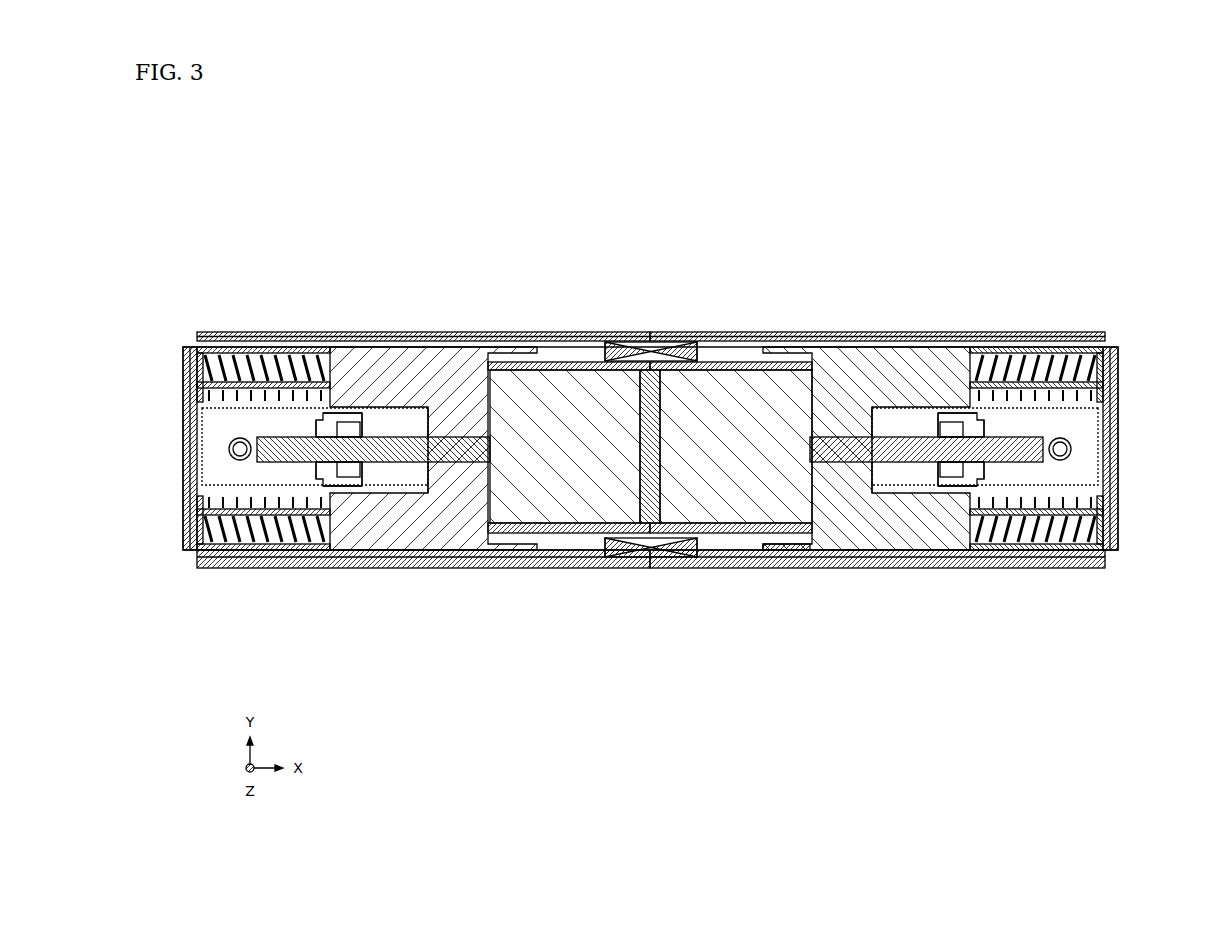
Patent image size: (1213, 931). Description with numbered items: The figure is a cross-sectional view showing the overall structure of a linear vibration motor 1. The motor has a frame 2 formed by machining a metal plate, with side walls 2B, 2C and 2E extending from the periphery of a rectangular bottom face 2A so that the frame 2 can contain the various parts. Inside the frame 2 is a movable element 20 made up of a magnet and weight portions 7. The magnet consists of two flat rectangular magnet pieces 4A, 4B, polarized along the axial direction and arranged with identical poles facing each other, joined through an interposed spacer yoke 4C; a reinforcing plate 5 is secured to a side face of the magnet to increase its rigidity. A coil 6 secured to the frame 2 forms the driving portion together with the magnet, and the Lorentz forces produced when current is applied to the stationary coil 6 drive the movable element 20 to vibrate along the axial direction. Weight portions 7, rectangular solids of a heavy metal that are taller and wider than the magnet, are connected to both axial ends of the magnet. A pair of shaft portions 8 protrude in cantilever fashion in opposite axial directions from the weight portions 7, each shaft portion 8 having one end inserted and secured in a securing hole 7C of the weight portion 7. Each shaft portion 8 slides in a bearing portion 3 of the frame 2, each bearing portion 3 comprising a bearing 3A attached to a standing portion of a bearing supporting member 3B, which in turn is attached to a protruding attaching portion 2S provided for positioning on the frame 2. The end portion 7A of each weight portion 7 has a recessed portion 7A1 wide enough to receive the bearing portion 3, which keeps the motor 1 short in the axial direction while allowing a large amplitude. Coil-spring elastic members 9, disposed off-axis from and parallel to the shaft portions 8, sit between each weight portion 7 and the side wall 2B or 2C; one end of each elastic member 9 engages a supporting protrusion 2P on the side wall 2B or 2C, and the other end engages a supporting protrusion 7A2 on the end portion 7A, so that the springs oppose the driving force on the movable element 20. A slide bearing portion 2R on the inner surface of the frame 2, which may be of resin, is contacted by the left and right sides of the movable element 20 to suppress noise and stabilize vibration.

The linear vibration motor 1 is at (1000, 245).
The frame 2 is at (1117, 337).
The bottom face 2A is at (573, 332).
The side wall 2B is at (183, 447).
The side wall 2C is at (1118, 410).
The side wall 2E is at (810, 332).
The supporting protrusion 2P is at (205, 332).
The slide bearing portion 2R is at (306, 332).
The attaching portion 2S is at (241, 438).
The bearing portion 3 is at (470, 265).
The bearing 3A is at (428, 407).
The bearing supporting member 3B is at (362, 415).
The magnet piece 4A is at (550, 512).
The magnet piece 4B is at (735, 515).
The spacer yoke 4C is at (630, 500).
The reinforcing plate 5 is at (720, 345).
The coil 6 is at (600, 348).
The weight portion 7 is at (440, 400).
The end portion 7A is at (334, 385).
The recessed portion 7A1 is at (408, 470).
The supporting protrusion 7A2 is at (322, 412).
The securing hole 7C is at (463, 455).
The shaft portion 8 is at (385, 463).
The elastic member 9 is at (236, 332).
The movable element 20 is at (850, 455).